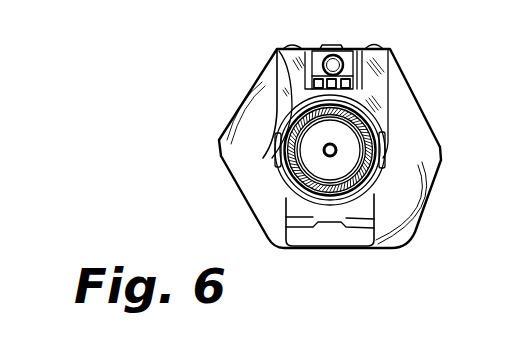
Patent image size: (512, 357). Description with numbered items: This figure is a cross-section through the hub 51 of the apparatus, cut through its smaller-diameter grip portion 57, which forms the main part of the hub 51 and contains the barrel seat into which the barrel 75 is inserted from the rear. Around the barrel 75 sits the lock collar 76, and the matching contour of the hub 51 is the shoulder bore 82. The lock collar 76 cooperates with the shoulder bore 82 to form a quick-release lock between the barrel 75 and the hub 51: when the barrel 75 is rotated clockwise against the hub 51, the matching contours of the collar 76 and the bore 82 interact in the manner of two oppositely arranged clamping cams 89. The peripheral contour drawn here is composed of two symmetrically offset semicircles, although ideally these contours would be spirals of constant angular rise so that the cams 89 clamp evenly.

The hub 51 is at (278, 104).
The grip portion 57 is at (394, 138).
The barrel 75 is at (290, 166).
The lock collar 76 is at (366, 187).
The shoulder bore 82 is at (384, 158).
The clamping cams 89 is at (280, 102).